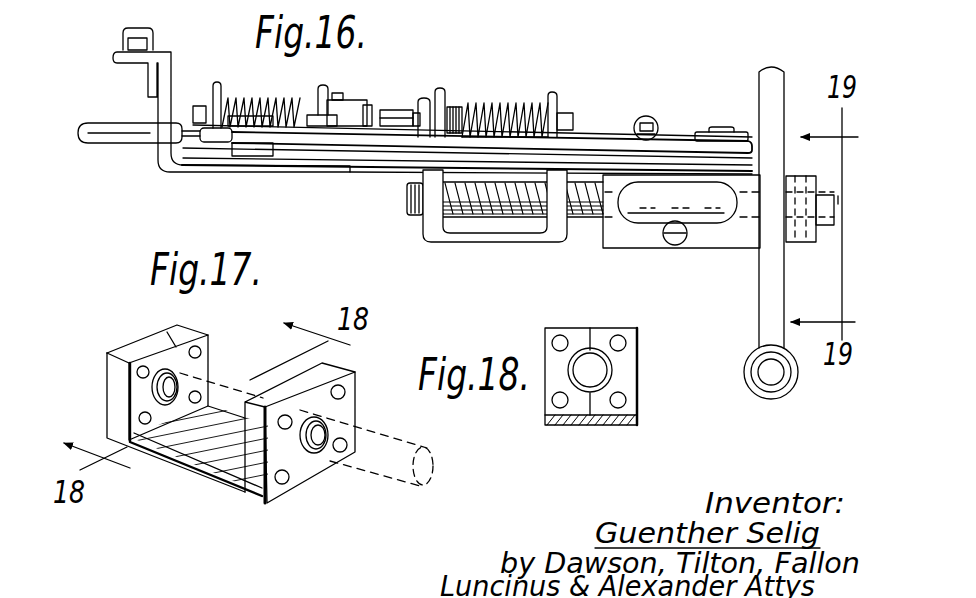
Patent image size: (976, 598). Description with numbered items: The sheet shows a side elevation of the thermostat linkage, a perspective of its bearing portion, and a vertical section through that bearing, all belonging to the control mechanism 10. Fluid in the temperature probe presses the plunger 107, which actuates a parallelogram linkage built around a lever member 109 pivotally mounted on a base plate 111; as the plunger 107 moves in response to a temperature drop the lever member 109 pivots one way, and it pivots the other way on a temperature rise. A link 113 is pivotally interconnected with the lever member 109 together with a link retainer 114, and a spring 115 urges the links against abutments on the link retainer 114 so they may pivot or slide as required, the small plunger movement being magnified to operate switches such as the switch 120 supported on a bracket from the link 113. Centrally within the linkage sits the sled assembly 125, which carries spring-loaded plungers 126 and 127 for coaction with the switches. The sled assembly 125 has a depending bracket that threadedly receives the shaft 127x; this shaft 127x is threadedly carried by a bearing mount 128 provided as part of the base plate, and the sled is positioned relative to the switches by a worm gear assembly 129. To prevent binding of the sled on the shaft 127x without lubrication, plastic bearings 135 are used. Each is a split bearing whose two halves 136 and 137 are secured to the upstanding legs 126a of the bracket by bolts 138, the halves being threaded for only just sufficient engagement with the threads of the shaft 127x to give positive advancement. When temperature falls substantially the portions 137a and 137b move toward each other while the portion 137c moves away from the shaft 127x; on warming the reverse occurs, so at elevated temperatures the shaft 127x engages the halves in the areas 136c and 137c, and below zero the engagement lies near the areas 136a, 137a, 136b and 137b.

In FIG. 16, the control mechanism 10 is at (508, 12).
In FIG. 16, the plunger 107 is at (98, 124).
In FIG. 16, the lever member 109 is at (275, 95).
In FIG. 16, the base plate 111 is at (194, 174).
In FIG. 16, the link 113 is at (591, 144).
In FIG. 16, the link retainer 114 is at (704, 131).
In FIG. 16, the spring 115 is at (654, 125).
In FIG. 16, the switch 120 is at (354, 103).
In FIG. 16, the sled assembly 125 is at (450, 90).
In FIG. 16, the spring-loaded plunger 126 is at (500, 243).
In FIG. 17, the spring-loaded plunger 126 is at (222, 488).
In FIG. 18, the spring-loaded plunger 126 is at (550, 427).
In FIG. 16, the upstanding legs 126a is at (408, 211).
In FIG. 17, the upstanding legs 126a is at (107, 378).
In FIG. 18, the spring-loaded plunger 127 is at (573, 378).
In FIG. 16, the shaft 127x is at (405, 208).
In FIG. 17, the shaft 127x is at (368, 436).
In FIG. 16, the bearing mount 128 is at (716, 234).
In FIG. 16, the worm gear assembly 129 is at (567, 110).
In FIG. 16, the plastic bearings 135 is at (437, 222).
In FIG. 17, the plastic bearings 135 is at (209, 332).
In FIG. 18, the plastic bearings 135 is at (631, 343).
In FIG. 18, the bearing half 136 is at (599, 329).
In FIG. 18, the engagement area 136a is at (607, 401).
In FIG. 18, the engagement area 136b is at (594, 351).
In FIG. 18, the engagement area 136c is at (612, 368).
In FIG. 18, the bearing half 137 is at (574, 329).
In FIG. 18, the bearing portion 137a is at (580, 408).
In FIG. 18, the bearing portion 137b is at (562, 350).
In FIG. 18, the bearing portion 137c is at (560, 389).
In FIG. 17, the bolts 138 is at (133, 348).
In FIG. 18, the bolts 138 is at (561, 339).